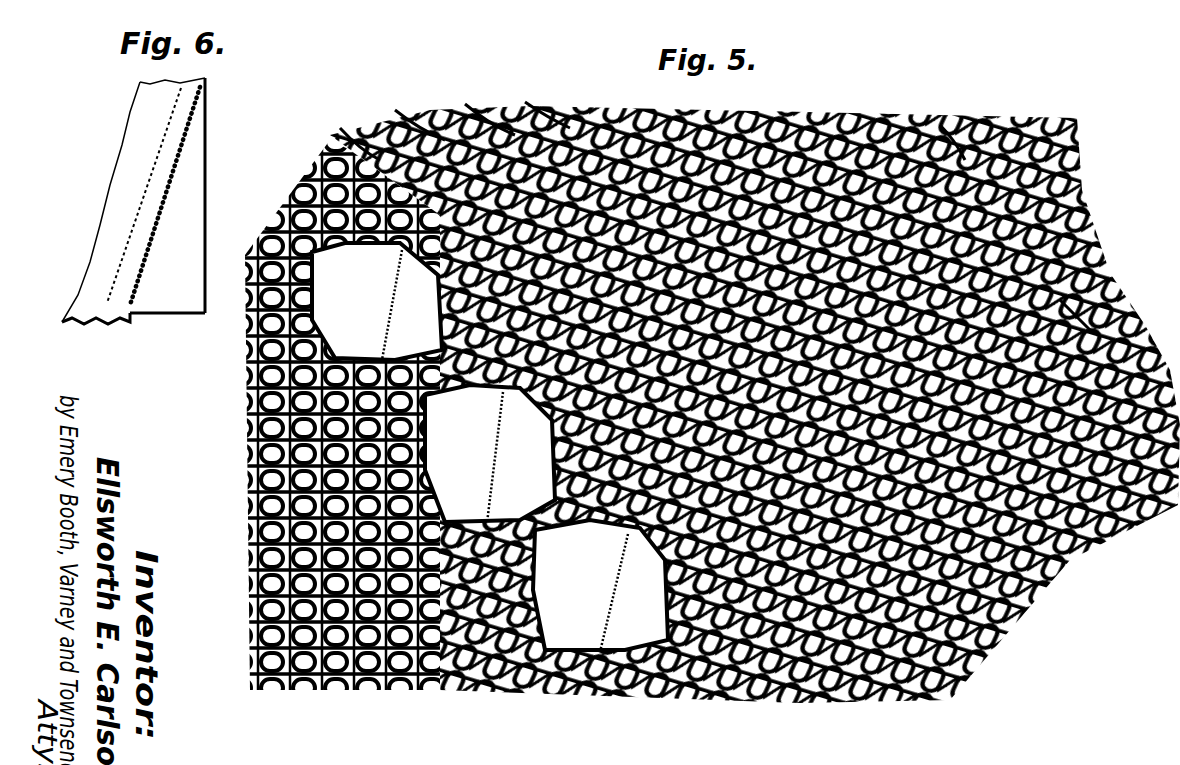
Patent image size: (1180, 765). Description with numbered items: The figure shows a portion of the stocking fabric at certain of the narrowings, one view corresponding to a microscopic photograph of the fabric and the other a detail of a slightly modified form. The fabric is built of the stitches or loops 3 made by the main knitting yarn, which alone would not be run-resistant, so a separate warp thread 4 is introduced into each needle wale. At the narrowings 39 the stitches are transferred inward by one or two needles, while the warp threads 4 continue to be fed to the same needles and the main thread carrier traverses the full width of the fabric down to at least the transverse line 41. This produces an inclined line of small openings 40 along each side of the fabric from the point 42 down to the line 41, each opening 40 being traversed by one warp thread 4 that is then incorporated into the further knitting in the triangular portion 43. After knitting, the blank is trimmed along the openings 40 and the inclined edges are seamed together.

In FIG. 5, the stitches or loops of the main knitting yarn 3 is at (538, 106).
In FIG. 5, the warp threads 4 is at (348, 140).
In FIG. 6, the narrowings 39 is at (127, 251).
In FIG. 5, the narrowings 39 is at (956, 136).
In FIG. 6, the openings 40 is at (158, 218).
In FIG. 5, the openings 40 is at (490, 446).
In FIG. 6, the transverse line 41 is at (165, 313).
In FIG. 6, the point 42 is at (205, 88).
In FIG. 6, the triangular portions 43 is at (133, 201).